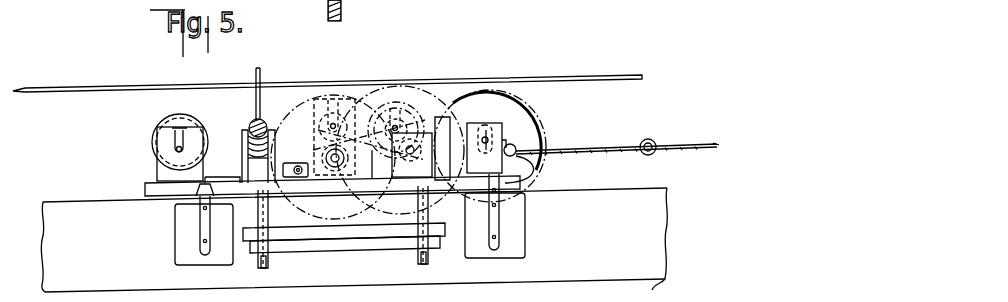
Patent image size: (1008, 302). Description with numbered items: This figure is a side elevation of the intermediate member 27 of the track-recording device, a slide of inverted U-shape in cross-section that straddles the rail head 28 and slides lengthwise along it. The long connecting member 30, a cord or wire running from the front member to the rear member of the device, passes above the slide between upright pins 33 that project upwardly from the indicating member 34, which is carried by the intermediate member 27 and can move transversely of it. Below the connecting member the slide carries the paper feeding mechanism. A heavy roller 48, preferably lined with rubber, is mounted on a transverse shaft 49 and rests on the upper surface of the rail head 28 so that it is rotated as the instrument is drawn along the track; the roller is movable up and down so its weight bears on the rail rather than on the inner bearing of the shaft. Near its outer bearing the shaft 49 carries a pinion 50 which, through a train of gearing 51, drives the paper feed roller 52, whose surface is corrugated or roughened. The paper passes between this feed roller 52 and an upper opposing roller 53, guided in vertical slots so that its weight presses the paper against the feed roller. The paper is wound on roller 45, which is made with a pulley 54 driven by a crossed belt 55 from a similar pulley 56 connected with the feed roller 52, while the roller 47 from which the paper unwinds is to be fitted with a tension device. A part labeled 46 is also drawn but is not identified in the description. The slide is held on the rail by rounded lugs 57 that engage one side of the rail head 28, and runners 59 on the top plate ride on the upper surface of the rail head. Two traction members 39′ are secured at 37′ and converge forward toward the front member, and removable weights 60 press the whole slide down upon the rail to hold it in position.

The intermediate member 27 is at (148, 185).
The rail head 28 is at (79, 206).
The connecting member 30 is at (568, 76).
The upright pins 33 is at (261, 76).
The indicating member 34 is at (250, 123).
The securing point 37′ is at (520, 147).
The traction members 39′ is at (584, 148).
The paper winding roller 45 is at (401, 100).
The spring housing 46 is at (219, 178).
The paper unwinding roller 47 is at (165, 128).
The roller 48 is at (524, 104).
The transverse shaft 49 is at (487, 125).
The pinion 50 is at (502, 140).
The train of gearing 51 is at (450, 90).
The paper feed roller 52 is at (374, 200).
The upper opposing roller 53 is at (325, 96).
The pulley 54 is at (372, 88).
The crossed belt 55 is at (366, 148).
The pulley 56 is at (333, 157).
The rounded lugs 57 is at (182, 236).
The runners 59 is at (170, 196).
The removable weights 60 is at (348, 231).